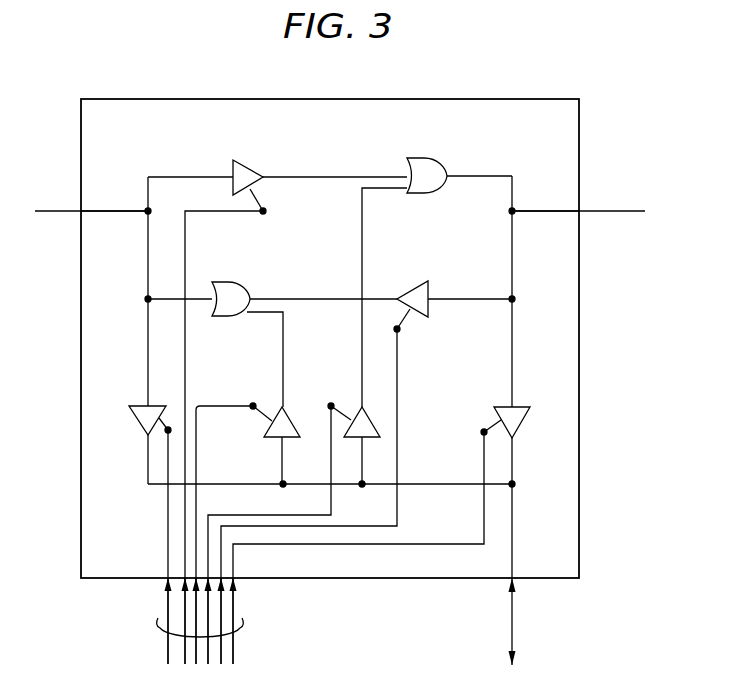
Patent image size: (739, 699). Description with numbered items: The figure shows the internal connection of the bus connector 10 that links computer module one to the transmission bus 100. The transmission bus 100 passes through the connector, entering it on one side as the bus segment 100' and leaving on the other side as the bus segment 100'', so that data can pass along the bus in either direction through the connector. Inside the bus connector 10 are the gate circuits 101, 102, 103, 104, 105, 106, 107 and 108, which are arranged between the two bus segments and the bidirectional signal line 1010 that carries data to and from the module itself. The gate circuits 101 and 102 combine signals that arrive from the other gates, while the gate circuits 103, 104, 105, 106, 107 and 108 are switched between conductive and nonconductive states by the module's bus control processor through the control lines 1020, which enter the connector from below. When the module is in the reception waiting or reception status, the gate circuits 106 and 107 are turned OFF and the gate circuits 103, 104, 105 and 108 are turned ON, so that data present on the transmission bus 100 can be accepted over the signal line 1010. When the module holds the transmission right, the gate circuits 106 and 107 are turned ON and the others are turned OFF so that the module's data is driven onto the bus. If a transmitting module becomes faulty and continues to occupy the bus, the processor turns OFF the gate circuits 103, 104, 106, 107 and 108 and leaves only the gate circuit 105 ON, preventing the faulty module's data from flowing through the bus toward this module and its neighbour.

The bus connector 10 is at (333, 99).
The transmission bus 100 is at (340, 234).
The transmission bus segment 100' is at (116, 232).
The transmission bus segment 100'' is at (544, 232).
The gate circuit 101 is at (446, 168).
The gate circuit 102 is at (232, 283).
The gate circuit 103 is at (247, 170).
The gate circuit 104 is at (412, 283).
The gate circuit 105 is at (136, 407).
The gate circuit 106 is at (295, 420).
The gate circuit 107 is at (372, 415).
The gate circuit 108 is at (522, 415).
The control lines 1020 is at (158, 630).
The bidirectional signal line 1010 is at (512, 608).